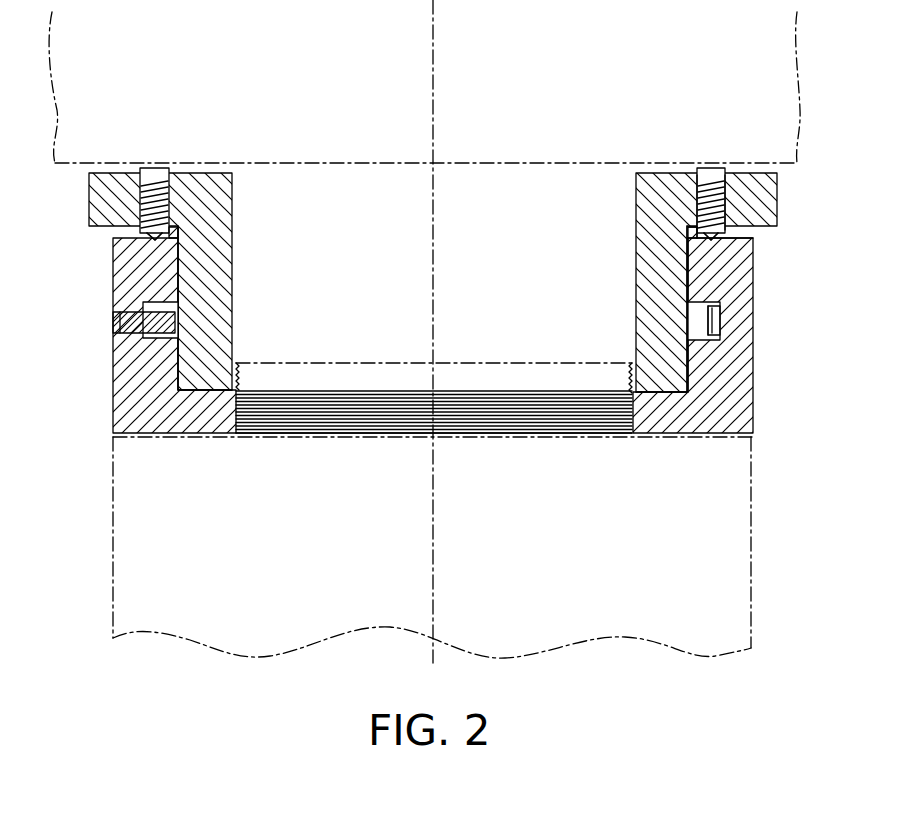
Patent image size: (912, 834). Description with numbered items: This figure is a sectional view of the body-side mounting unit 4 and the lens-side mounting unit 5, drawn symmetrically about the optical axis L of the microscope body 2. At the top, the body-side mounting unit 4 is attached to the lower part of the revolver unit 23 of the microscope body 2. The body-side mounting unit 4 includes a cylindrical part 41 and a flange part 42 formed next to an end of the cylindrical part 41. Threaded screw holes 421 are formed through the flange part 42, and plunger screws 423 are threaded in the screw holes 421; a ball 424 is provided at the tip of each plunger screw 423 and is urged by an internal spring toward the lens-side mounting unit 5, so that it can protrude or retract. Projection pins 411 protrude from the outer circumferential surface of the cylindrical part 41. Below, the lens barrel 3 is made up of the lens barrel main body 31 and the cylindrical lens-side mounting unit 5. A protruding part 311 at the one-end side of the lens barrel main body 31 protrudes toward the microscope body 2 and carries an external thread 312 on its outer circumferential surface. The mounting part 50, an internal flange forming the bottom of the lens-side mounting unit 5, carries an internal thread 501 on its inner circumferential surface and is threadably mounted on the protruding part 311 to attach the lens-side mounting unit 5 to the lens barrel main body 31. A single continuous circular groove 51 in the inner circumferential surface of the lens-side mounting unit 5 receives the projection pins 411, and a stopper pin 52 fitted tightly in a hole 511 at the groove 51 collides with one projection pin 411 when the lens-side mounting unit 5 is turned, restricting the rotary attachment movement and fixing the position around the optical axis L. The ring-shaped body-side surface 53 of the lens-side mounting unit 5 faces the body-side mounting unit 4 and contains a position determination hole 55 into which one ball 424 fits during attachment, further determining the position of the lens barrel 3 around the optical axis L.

The microscope body 2 is at (799, 22).
The revolver unit 23 is at (797, 58).
The lens barrel 3 is at (798, 467).
The lens barrel main body 31 is at (753, 500).
The protruding part 311 is at (525, 360).
The external thread 312 is at (628, 362).
The body-side mounting unit 4 is at (778, 179).
The flange part 42 is at (775, 212).
The screw hole 421 is at (712, 183).
The plunger screw 423 is at (155, 166).
The ball 424 is at (150, 241).
The lens-side mounting unit 5 is at (754, 398).
The mounting part 50 is at (676, 437).
The internal thread 501 is at (613, 437).
The groove 51 is at (722, 330).
The hole 511 is at (116, 323).
The stopper pin 52 is at (145, 312).
The body-side surface 53 is at (742, 232).
The position determination hole 55 is at (725, 243).
The cylindrical part 41 is at (695, 275).
The projection pin 411 is at (700, 318).
The optical axis L is at (433, 118).